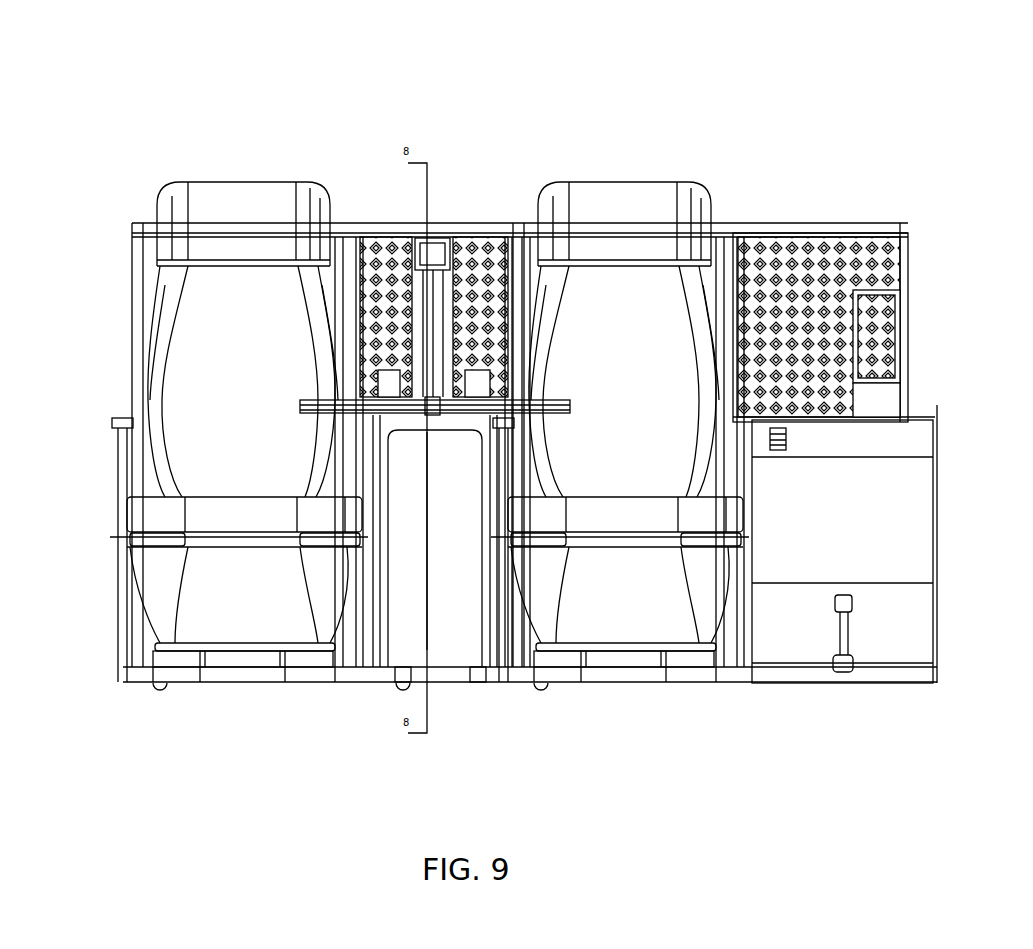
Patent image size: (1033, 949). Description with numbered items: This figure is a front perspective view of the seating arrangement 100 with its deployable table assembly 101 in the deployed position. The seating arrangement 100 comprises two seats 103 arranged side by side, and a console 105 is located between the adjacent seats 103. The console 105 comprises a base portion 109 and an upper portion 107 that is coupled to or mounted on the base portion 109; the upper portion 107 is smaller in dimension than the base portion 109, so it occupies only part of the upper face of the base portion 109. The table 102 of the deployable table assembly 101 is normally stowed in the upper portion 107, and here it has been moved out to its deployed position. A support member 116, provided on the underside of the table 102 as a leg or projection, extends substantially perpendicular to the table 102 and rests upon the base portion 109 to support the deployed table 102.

The seating arrangement 100 is at (443, 80).
The deployable table assembly 101 is at (447, 220).
The table 102 is at (300, 403).
The seat 103 is at (232, 179).
The console 105 is at (407, 650).
The upper portion 107 is at (397, 227).
The base portion 109 is at (455, 647).
The support member 116 is at (372, 427).